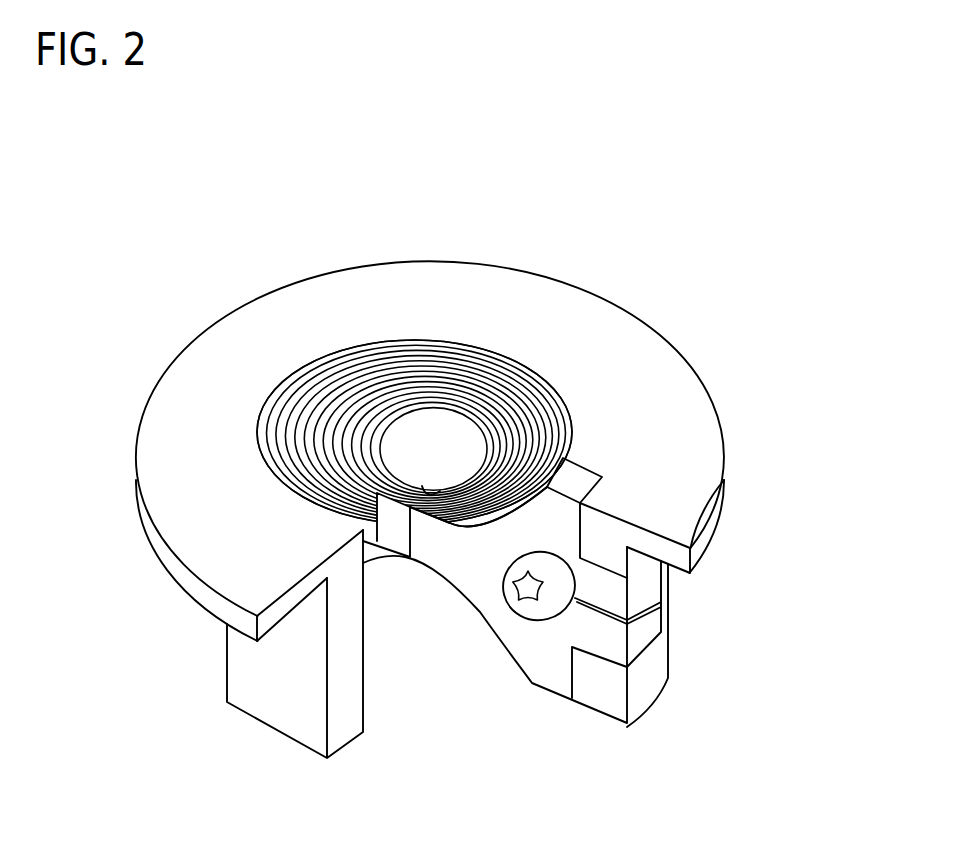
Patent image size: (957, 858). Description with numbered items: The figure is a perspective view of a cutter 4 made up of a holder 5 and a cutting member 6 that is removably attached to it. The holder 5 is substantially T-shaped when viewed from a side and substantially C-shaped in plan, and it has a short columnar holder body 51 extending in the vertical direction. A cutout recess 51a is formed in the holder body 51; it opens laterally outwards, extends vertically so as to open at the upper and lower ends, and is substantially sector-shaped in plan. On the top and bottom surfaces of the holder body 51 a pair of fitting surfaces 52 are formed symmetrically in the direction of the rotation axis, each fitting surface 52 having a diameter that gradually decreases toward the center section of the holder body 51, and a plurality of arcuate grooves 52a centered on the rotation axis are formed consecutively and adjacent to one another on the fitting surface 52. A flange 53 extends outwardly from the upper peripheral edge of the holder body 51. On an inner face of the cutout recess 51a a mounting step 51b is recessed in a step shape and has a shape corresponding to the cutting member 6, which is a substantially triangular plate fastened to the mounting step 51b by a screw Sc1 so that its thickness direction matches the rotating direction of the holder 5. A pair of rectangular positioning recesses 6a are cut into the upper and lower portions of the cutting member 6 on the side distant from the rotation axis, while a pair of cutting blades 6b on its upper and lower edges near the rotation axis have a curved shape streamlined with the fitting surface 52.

The cutter 4 is at (620, 206).
The holder 5 is at (672, 334).
The flange 53 is at (712, 388).
The fitting surface 52 is at (326, 358).
The arcuate grooves 52a is at (402, 356).
The holder body 51 is at (270, 728).
The cutout recess 51a is at (423, 488).
The mounting step 51b is at (580, 480).
The cutting member 6 is at (446, 590).
The positioning recesses 6a is at (583, 540).
The cutting blades 6b is at (445, 523).
The screw Sc1 is at (522, 617).